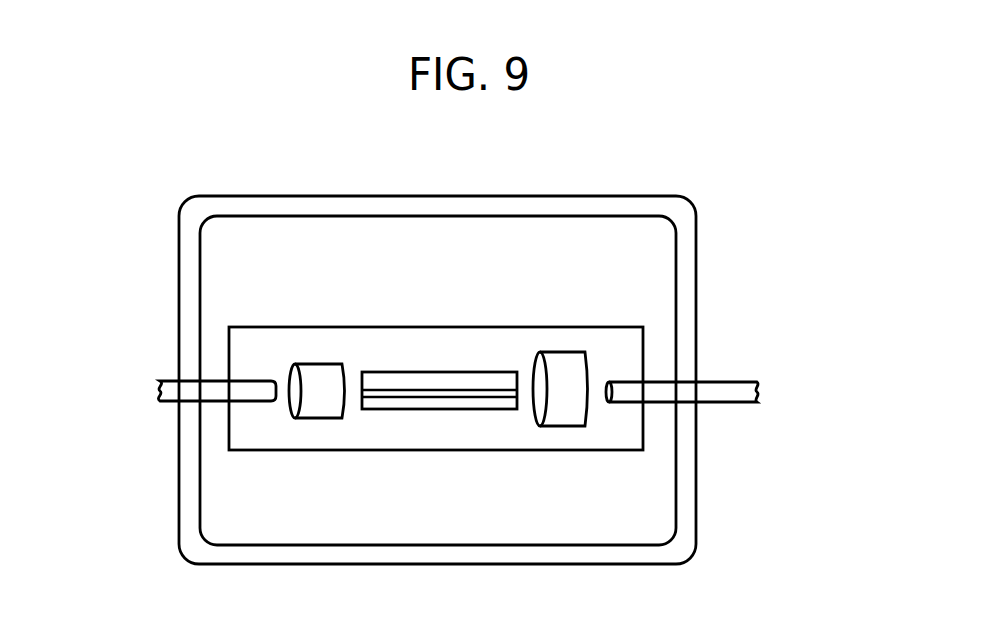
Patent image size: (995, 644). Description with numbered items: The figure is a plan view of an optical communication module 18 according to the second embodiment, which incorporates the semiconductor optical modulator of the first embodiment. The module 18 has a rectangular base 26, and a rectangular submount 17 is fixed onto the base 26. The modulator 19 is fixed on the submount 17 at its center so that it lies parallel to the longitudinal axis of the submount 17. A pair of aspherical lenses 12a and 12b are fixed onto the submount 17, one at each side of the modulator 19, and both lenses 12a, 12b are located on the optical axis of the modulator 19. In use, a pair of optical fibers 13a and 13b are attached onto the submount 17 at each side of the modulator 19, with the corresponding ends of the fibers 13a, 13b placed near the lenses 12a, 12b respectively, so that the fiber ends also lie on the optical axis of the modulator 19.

The optical communication module 18 is at (537, 183).
The base 26 is at (662, 257).
The submount 17 is at (633, 440).
The modulator 19 is at (419, 403).
The aspherical lens 12a is at (307, 368).
The aspherical lens 12b is at (580, 363).
The optical fiber 13a is at (173, 397).
The optical fiber 13b is at (707, 397).